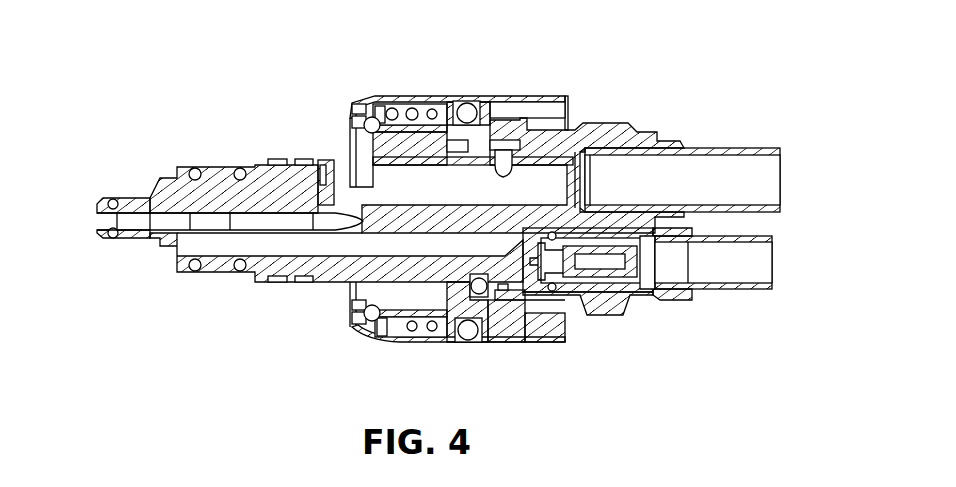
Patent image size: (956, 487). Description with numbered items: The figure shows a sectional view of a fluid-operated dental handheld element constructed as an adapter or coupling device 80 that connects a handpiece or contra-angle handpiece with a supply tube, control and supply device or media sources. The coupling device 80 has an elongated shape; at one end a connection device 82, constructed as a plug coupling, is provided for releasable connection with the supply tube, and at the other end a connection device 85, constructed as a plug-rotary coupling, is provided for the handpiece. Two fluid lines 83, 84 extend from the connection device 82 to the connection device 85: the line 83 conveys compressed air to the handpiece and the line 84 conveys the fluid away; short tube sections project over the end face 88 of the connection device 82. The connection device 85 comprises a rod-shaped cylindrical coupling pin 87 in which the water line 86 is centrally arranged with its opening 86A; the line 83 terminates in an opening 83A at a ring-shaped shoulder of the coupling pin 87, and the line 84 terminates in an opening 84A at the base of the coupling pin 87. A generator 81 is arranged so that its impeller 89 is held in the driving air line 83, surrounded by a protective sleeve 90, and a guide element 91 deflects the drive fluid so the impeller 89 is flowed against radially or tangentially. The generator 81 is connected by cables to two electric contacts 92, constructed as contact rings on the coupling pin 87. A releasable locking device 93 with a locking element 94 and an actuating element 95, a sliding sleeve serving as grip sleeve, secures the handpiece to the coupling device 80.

The coupling device 80 is at (320, 57).
The generator 81 is at (630, 298).
The connection device 82 is at (683, 108).
The fluid line 83 is at (768, 272).
The opening 83A is at (167, 248).
The fluid line 84 is at (775, 185).
The opening 84A is at (338, 186).
The connection device 85 is at (224, 148).
The fluid line 86 is at (120, 220).
The opening 86A is at (95, 217).
The coupling pin 87 is at (192, 193).
The end face 88 is at (688, 301).
The impeller 89 is at (548, 279).
The sleeve 90 is at (590, 297).
The guide element 91 is at (548, 302).
The electric contacts 92 is at (302, 155).
The locking device 93 is at (421, 93).
The locking element 94 is at (371, 112).
The actuating element 95 is at (372, 325).